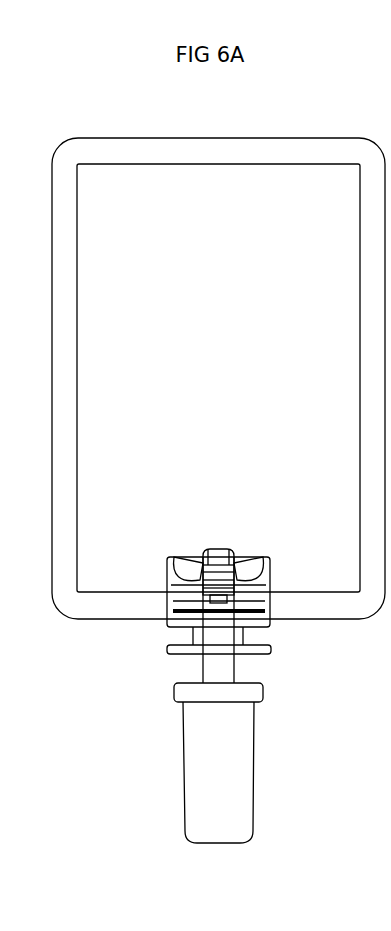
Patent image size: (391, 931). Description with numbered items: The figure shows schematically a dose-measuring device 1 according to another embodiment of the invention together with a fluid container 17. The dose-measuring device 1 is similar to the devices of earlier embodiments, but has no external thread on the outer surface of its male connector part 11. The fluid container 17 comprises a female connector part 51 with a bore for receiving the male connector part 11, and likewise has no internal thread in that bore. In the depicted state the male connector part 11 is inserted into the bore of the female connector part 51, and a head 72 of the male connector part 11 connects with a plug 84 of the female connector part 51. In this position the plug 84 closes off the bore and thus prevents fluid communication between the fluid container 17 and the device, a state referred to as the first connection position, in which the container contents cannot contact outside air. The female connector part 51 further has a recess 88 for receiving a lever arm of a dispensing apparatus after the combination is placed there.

The fluid container 17 is at (303, 145).
The female connector part 51 is at (173, 618).
The plug 84 is at (225, 552).
The head 72 is at (208, 562).
The recess 88 is at (265, 634).
The male connector part 11 is at (210, 663).
The dose-measuring device 1 is at (273, 792).